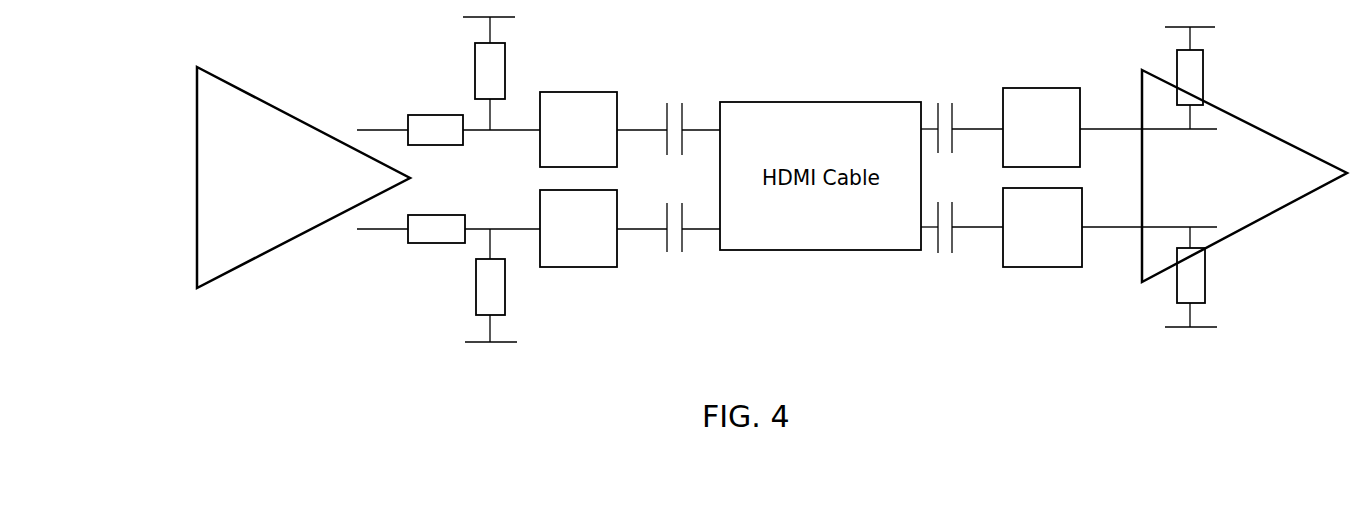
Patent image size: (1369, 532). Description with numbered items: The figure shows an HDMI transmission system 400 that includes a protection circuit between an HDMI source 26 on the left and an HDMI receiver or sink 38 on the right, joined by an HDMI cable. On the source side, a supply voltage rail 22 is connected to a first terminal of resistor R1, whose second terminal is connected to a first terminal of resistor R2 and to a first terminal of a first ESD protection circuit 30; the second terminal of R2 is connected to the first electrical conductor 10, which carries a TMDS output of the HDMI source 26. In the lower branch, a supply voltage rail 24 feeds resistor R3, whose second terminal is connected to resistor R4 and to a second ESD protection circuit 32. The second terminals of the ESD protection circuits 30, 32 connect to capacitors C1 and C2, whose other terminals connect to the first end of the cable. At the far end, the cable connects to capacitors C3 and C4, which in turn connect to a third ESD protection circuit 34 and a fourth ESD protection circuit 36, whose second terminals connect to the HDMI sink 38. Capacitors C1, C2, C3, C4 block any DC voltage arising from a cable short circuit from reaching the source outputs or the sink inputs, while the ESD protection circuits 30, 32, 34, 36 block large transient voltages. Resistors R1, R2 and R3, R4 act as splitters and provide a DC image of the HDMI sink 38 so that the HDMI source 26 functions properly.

The first electrical conductor 10 is at (370, 130).
The supply voltage rail 22 is at (462, 25).
The supply voltage rail 24 is at (473, 345).
The HDMI source 26 is at (195, 173).
The first electro-static discharge (ESD) protection circuit 30 is at (583, 90).
The second electro-static discharge (ESD) protection circuit 32 is at (582, 268).
The third ESD protection circuit 34 is at (1037, 88).
The fourth ESD protection circuit 36 is at (1038, 268).
The HDMI receiver or sink 38 is at (1258, 132).
The HDMI transmission system 400 is at (702, 350).
The resistor R1 is at (475, 86).
The resistor R2 is at (435, 118).
The resistor R3 is at (476, 272).
The resistor R4 is at (436, 216).
The first capacitor C1 is at (673, 113).
The second capacitor C2 is at (675, 245).
The capacitor C3 is at (946, 111).
The capacitor C4 is at (946, 244).